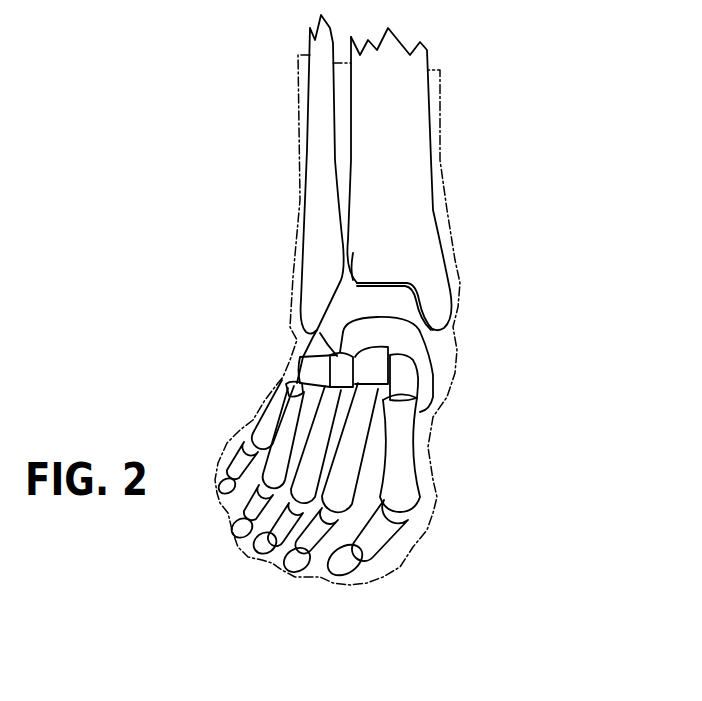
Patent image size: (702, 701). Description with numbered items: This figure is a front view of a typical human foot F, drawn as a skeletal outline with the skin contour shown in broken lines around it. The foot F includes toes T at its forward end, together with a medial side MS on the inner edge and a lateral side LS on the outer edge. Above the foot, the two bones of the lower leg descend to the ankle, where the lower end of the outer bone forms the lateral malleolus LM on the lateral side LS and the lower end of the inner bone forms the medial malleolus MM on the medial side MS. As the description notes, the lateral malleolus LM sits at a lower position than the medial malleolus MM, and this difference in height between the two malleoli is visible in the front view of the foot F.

The human foot F is at (208, 202).
The lateral malleolus LM is at (304, 305).
The lateral side LS is at (280, 383).
The medial malleolus MM is at (438, 308).
The medial side MS is at (427, 453).
The toes T is at (387, 530).